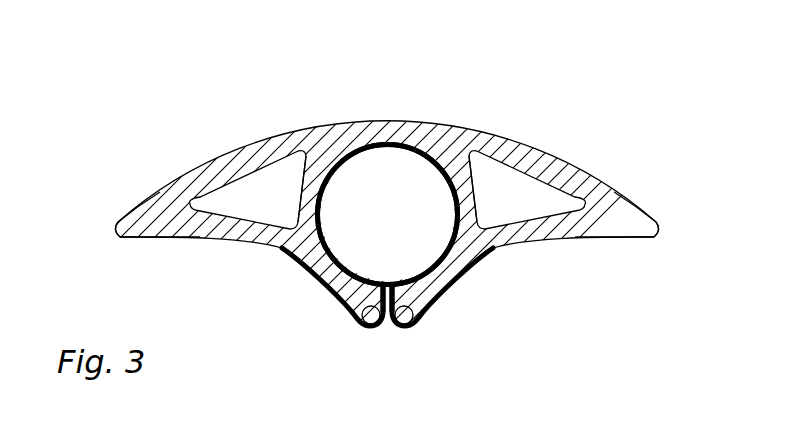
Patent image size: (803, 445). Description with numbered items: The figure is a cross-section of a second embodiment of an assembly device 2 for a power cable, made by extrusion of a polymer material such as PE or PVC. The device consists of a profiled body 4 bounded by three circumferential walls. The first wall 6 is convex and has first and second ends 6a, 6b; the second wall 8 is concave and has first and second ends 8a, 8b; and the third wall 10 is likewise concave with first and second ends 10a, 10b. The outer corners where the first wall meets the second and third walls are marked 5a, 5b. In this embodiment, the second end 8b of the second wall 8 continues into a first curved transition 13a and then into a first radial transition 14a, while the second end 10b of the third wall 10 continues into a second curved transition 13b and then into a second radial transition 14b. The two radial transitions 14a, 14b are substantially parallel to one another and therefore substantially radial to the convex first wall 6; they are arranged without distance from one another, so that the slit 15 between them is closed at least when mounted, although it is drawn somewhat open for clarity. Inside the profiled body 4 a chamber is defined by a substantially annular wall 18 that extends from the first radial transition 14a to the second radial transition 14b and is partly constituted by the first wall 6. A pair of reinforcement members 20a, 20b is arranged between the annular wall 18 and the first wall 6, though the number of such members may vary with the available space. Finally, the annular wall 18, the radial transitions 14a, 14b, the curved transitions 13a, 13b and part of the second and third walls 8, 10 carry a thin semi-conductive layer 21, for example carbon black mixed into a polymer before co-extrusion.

The assembly device 2 is at (287, 74).
The profiled body 4 is at (494, 75).
The left edge 5a is at (114, 230).
The right edge 5b is at (660, 229).
The first wall 6 is at (200, 171).
The first end of the first wall 6a is at (140, 204).
The second end of the first wall 6b is at (647, 211).
The second wall 8 is at (217, 237).
The first end of the second wall 8a is at (152, 238).
The second end of the second wall 8b is at (335, 295).
The third wall 10 is at (538, 237).
The first end of the third wall 10a is at (640, 237).
The second end of the third wall 10b is at (450, 292).
The first curved transition 13a is at (368, 328).
The second curved transition 13b is at (404, 328).
The first radial transition 14a is at (352, 328).
The second radial transition 14b is at (418, 326).
The slit 15 is at (386, 287).
The annular wall 18 is at (387, 145).
The first reinforcement member 20a is at (320, 162).
The second reinforcement member 20b is at (461, 162).
The semi-conductive layer 21 is at (318, 204).